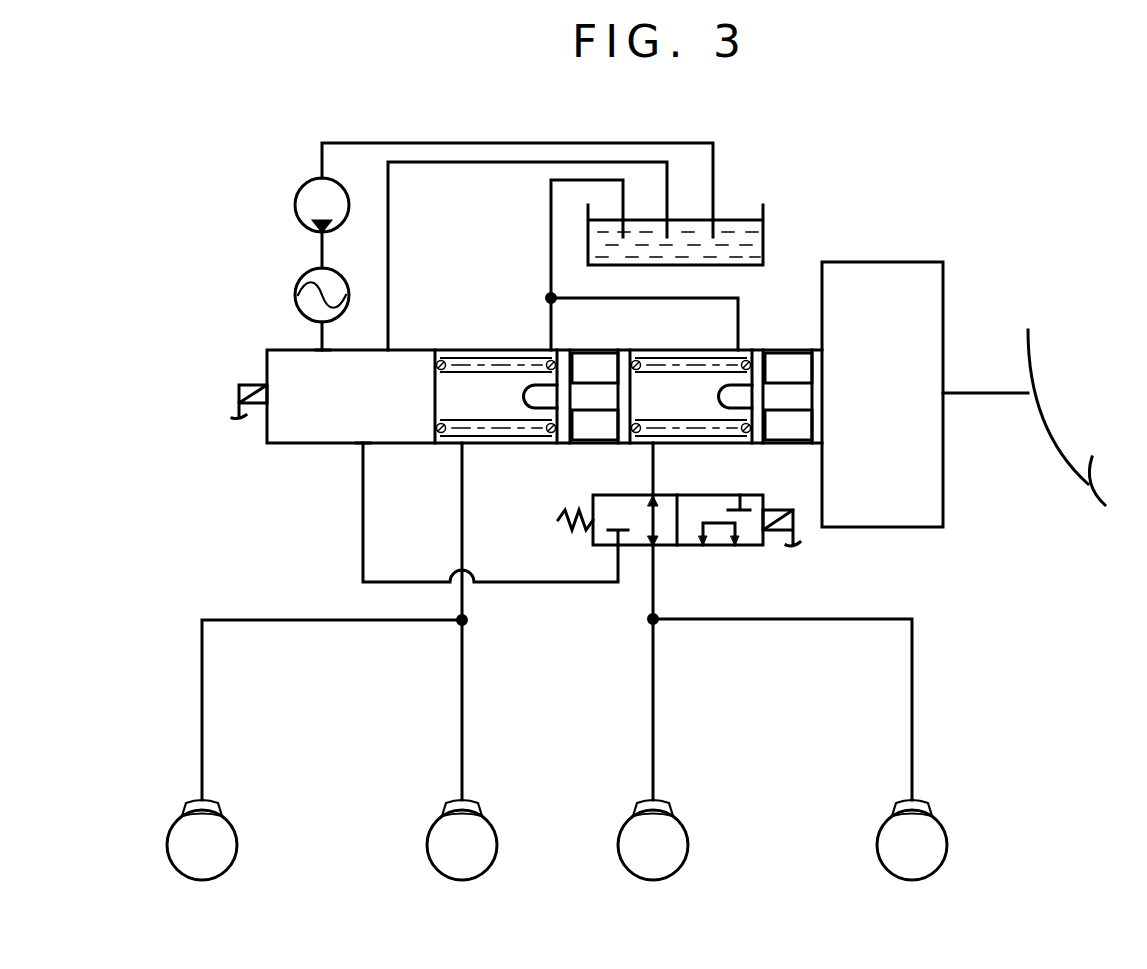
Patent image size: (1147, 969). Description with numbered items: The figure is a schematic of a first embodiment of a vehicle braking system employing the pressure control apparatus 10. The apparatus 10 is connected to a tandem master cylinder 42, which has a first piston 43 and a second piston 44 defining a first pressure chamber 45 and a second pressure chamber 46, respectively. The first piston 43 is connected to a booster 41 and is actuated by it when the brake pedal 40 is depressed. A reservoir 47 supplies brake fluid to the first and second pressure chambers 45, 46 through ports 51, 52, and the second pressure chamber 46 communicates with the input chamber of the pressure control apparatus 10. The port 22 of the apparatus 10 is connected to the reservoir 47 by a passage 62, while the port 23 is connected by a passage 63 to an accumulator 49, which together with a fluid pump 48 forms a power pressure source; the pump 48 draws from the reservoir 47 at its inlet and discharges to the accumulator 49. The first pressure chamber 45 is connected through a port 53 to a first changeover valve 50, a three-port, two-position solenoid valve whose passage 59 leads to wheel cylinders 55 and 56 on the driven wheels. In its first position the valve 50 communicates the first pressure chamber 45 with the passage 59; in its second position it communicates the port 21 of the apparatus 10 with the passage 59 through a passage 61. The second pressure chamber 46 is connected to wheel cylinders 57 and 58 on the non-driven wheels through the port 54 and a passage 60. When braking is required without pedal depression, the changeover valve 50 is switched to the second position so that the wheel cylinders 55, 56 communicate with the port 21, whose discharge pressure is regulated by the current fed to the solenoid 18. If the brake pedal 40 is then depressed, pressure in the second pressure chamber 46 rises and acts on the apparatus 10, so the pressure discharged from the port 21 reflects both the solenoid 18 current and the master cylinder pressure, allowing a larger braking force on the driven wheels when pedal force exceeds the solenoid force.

The pressure control apparatus 10 is at (302, 446).
The solenoid 18 is at (238, 392).
The port 21 is at (358, 447).
The port 22 is at (397, 350).
The port 23 is at (320, 350).
The brake pedal 40 is at (1032, 354).
The booster 41 is at (905, 261).
The tandem master cylinder 42 is at (765, 320).
The first piston 43 is at (780, 400).
The second piston 44 is at (587, 397).
The first pressure chamber 45 is at (684, 400).
The second pressure chamber 46 is at (490, 400).
The reservoir 47 is at (728, 217).
The fluid pump 48 is at (305, 208).
The accumulator 49 is at (308, 302).
The first changeover valve 50 is at (750, 547).
The port 51 is at (737, 349).
The port 52 is at (548, 349).
The port 53 is at (650, 447).
The port 54 is at (459, 447).
The wheel cylinder 55 is at (919, 796).
The wheel cylinder 56 is at (660, 796).
The wheel cylinder 57 is at (469, 796).
The wheel cylinder 58 is at (209, 796).
The passage 59 is at (652, 613).
The passage 60 is at (466, 615).
The passage 61 is at (362, 551).
The passage 62 is at (388, 210).
The passage 63 is at (319, 332).